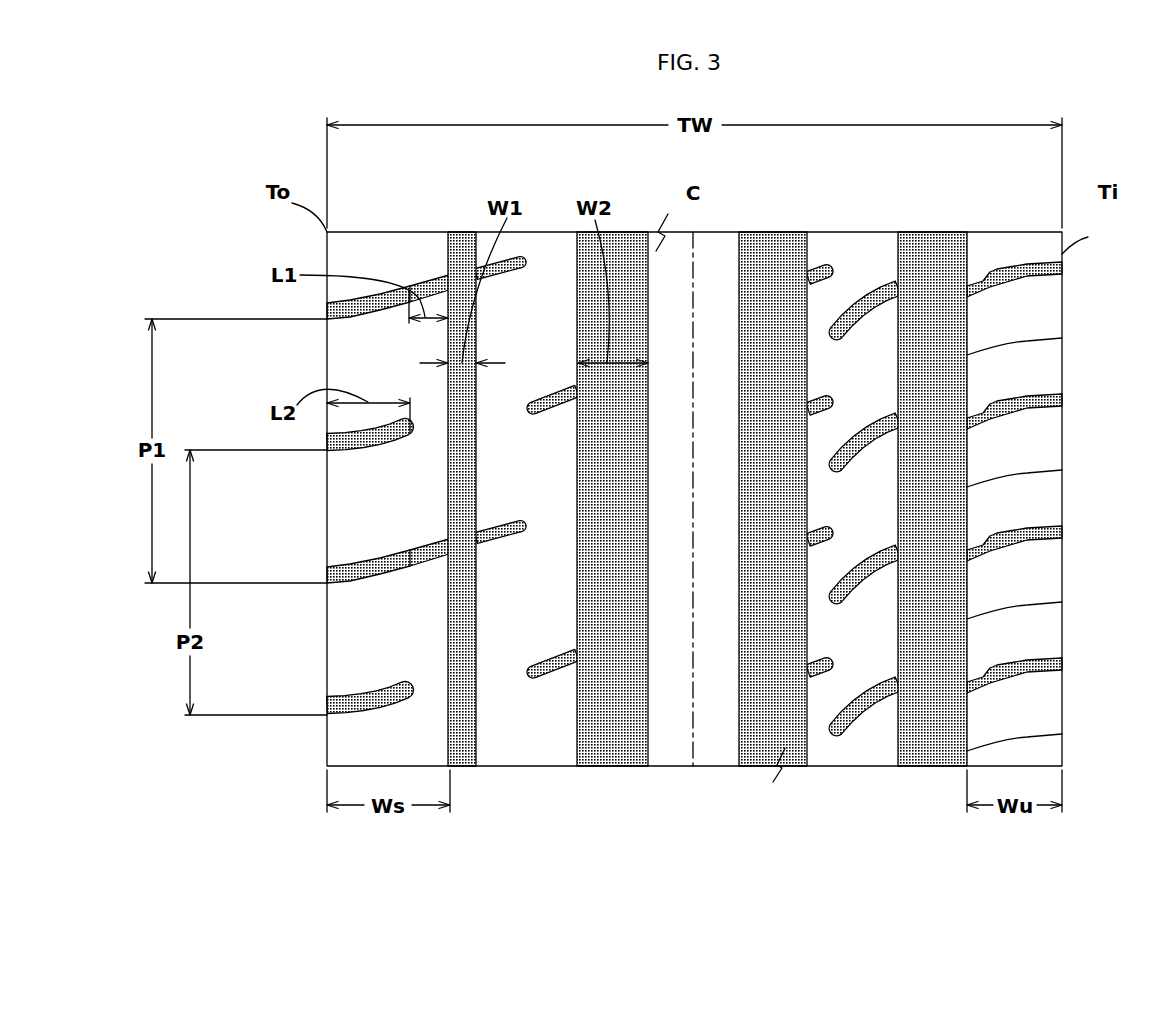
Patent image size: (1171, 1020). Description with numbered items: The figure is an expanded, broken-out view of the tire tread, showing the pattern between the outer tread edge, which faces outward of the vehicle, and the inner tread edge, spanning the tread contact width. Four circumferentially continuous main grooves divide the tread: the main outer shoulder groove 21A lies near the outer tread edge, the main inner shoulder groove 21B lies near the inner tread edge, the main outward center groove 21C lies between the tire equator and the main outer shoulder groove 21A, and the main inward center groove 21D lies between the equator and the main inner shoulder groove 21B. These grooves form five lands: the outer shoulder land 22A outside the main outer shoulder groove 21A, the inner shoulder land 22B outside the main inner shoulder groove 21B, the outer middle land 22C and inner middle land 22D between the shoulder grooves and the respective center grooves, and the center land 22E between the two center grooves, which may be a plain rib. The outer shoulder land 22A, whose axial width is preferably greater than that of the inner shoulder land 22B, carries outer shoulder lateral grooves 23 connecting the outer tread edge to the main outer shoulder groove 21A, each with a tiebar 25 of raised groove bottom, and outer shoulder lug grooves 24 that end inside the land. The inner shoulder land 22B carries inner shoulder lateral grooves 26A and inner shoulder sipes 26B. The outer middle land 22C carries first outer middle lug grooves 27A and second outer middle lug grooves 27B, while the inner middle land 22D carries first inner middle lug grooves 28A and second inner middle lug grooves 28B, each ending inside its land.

The main outer shoulder groove 21A is at (463, 252).
The main inner shoulder groove 21B is at (930, 258).
The main outward center groove 21C is at (623, 282).
The main inward center groove 21D is at (772, 275).
The outer shoulder land 22A is at (390, 256).
The inner shoulder land 22B is at (1005, 250).
The outer middle land 22C is at (548, 305).
The inner middle land 22D is at (850, 280).
The center land 22E is at (712, 283).
The outer shoulder lateral groove 23 is at (362, 307).
The outer shoulder lug groove 24 is at (362, 437).
The tiebar 25 is at (427, 553).
The inner shoulder lateral groove 26A is at (1032, 665).
The inner shoulder sipe 26B is at (1030, 605).
The first outer middle lug groove 27A is at (510, 540).
The second outer middle lug groove 27B is at (548, 676).
The first inner middle lug groove 28A is at (867, 703).
The second inner middle lug groove 28B is at (820, 672).